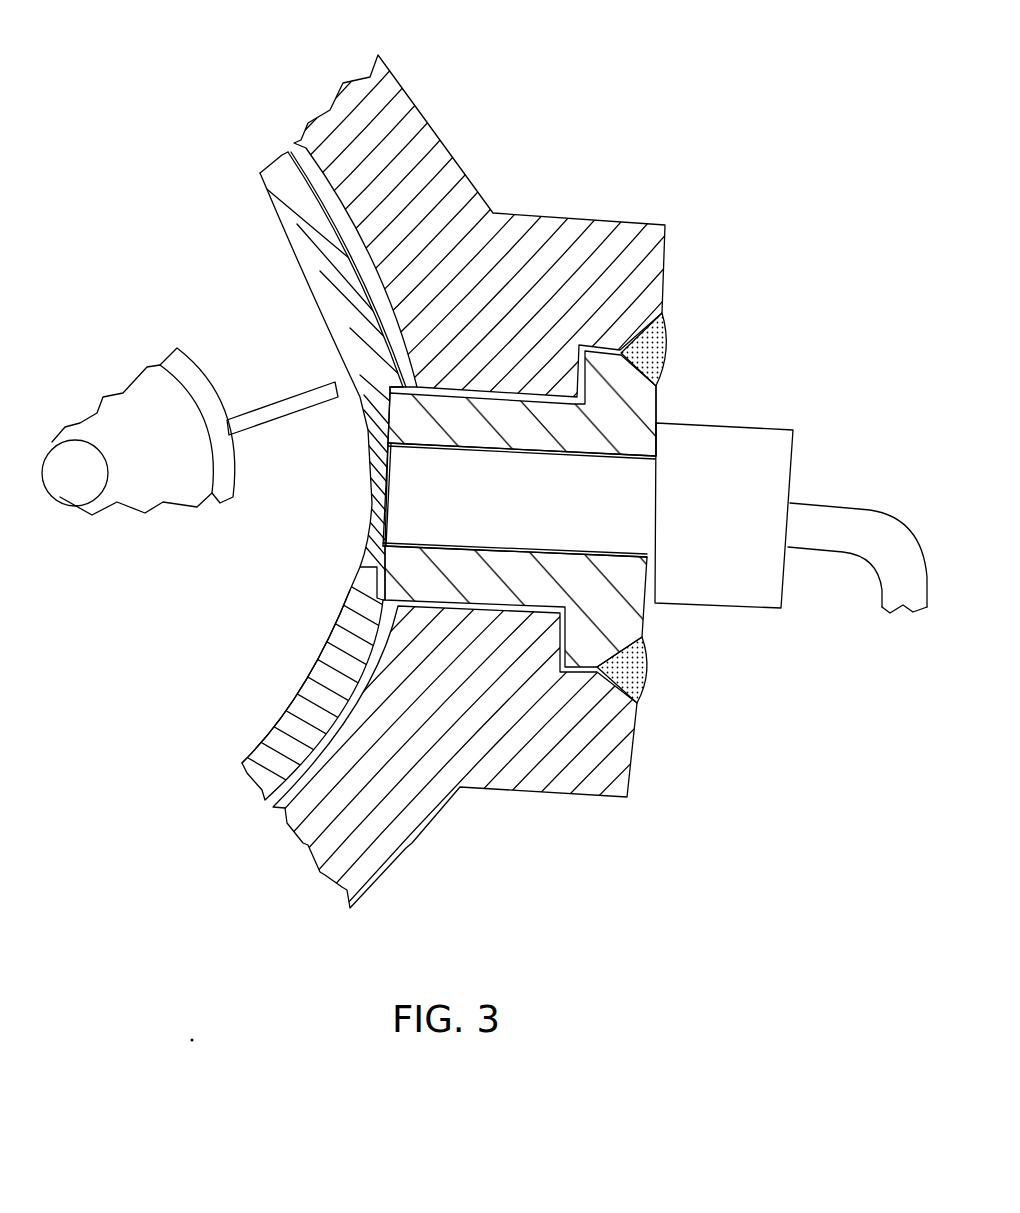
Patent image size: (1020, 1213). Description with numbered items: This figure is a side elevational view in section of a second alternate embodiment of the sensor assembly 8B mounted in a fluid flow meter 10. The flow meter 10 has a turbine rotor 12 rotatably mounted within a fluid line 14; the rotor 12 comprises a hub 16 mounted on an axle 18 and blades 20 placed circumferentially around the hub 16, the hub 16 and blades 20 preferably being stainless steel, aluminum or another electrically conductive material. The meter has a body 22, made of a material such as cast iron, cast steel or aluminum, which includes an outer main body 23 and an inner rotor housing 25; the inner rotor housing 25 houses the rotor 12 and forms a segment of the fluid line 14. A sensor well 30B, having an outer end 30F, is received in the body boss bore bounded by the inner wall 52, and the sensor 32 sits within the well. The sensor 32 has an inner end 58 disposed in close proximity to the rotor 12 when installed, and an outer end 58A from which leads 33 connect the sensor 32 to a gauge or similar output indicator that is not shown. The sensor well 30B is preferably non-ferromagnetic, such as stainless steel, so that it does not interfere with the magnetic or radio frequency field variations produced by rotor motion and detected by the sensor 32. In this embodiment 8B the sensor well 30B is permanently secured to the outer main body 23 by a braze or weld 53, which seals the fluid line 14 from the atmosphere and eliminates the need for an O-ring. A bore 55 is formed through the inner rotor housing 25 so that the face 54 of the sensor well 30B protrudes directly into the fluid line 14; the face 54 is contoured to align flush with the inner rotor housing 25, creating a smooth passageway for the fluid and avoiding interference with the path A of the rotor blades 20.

The fluid flow meter 10 is at (510, 606).
The turbine rotor 12 is at (188, 401).
The fluid line 14 is at (185, 598).
The hub 16 is at (103, 412).
The axle 18 is at (63, 493).
The blades 20 is at (248, 420).
The body 22 is at (510, 606).
The outer main body 23 is at (403, 842).
The inner rotor housing 25 is at (247, 773).
The outer end of sensor well 30F is at (657, 393).
The sensor well 30B is at (584, 509).
The sensor 32 is at (612, 503).
The leads 33 is at (840, 515).
The inner wall of body boss 52 is at (483, 392).
The braze or weld 53 is at (657, 350).
The face of sensor well 54 is at (378, 504).
The bore 55 is at (372, 423).
The inner end of sensor 58 is at (368, 540).
The outer end of sensor 58A is at (787, 582).
The sensor assembly 8B is at (734, 659).
The path of rotor blades A is at (315, 432).